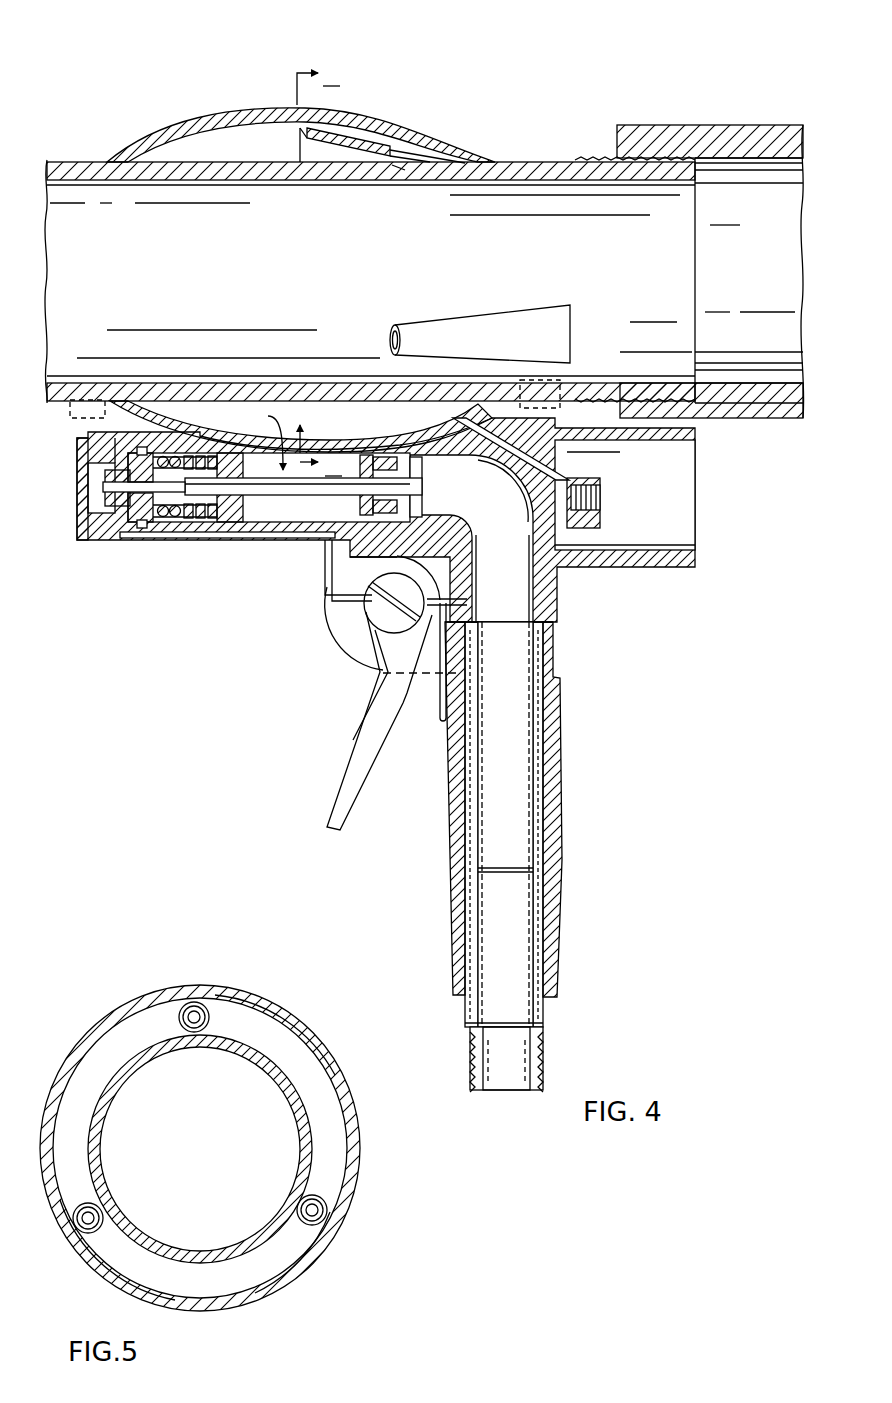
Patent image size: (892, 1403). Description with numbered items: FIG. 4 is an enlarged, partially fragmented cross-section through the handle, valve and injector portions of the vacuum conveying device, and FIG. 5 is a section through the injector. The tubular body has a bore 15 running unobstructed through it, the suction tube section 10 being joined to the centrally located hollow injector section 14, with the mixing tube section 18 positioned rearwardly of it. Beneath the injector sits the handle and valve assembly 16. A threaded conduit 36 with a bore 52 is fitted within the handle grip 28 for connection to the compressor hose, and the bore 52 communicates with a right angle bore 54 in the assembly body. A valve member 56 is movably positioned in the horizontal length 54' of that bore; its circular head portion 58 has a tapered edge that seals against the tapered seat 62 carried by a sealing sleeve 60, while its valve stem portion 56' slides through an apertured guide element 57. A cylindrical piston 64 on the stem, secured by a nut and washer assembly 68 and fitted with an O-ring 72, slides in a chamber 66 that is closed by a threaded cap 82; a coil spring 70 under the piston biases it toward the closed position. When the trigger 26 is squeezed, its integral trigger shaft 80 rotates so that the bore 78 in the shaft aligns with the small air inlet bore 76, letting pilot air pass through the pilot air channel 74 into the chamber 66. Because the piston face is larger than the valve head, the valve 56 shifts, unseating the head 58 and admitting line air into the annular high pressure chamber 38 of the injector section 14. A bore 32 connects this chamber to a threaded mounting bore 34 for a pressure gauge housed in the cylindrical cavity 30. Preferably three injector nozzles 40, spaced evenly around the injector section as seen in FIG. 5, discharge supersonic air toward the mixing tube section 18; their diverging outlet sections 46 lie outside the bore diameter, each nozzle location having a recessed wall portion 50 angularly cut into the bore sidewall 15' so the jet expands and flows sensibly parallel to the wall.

In FIG. 4, the suction tube section 10 is at (77, 162).
In FIG. 4, the injector section 14 is at (372, 110).
In FIG. 5, the injector section 14 is at (353, 1132).
In FIG. 4, the bore 15 is at (370, 280).
In FIG. 5, the bore 15 is at (200, 1149).
In FIG. 4, the bore sidewall 15' is at (565, 202).
In FIG. 4, the handle and valve assembly 16 is at (368, 686).
In FIG. 4, the mixing tube section 18 is at (735, 125).
In FIG. 4, the trigger 26 is at (328, 827).
In FIG. 4, the handle grip 28 is at (560, 824).
In FIG. 4, the cylindrical cavity 30 is at (663, 550).
In FIG. 4, the bore 32 is at (533, 460).
In FIG. 4, the threaded mounting bore 34 is at (600, 500).
In FIG. 4, the threaded conduit 36 is at (483, 1070).
In FIG. 4, the high pressure chamber 38 is at (262, 163).
In FIG. 5, the high pressure chamber 38 is at (214, 1293).
In FIG. 4, the injector nozzle 40 is at (367, 180).
In FIG. 5, the injector nozzle 40 is at (207, 1006).
In FIG. 4, the diverging outlet section 46 is at (395, 173).
In FIG. 4, the recessed wall portion 50 is at (452, 162).
In FIG. 4, the bore 52 is at (529, 770).
In FIG. 4, the right angle bore 54 is at (471, 538).
In FIG. 4, the horizontal length of bore 54' is at (271, 559).
In FIG. 4, the valve member 56 is at (260, 433).
In FIG. 4, the valve stem portion 56' is at (240, 536).
In FIG. 4, the apertured guide element 57 is at (213, 530).
In FIG. 4, the circular head portion 58 is at (425, 472).
In FIG. 4, the sealing sleeve 60 is at (325, 512).
In FIG. 4, the tapered seat 62 is at (425, 492).
In FIG. 4, the piston 64 is at (117, 458).
In FIG. 4, the chamber 66 is at (100, 478).
In FIG. 4, the nut and washer assembly 68 is at (105, 497).
In FIG. 4, the coil spring 70 is at (207, 522).
In FIG. 4, the O-ring 72 is at (143, 527).
In FIG. 4, the pilot air channel 74 is at (135, 527).
In FIG. 4, the air inlet bore 76 is at (441, 695).
In FIG. 4, the bore 78 is at (372, 660).
In FIG. 4, the trigger shaft 80 is at (385, 700).
In FIG. 4, the threaded cap 82 is at (77, 527).